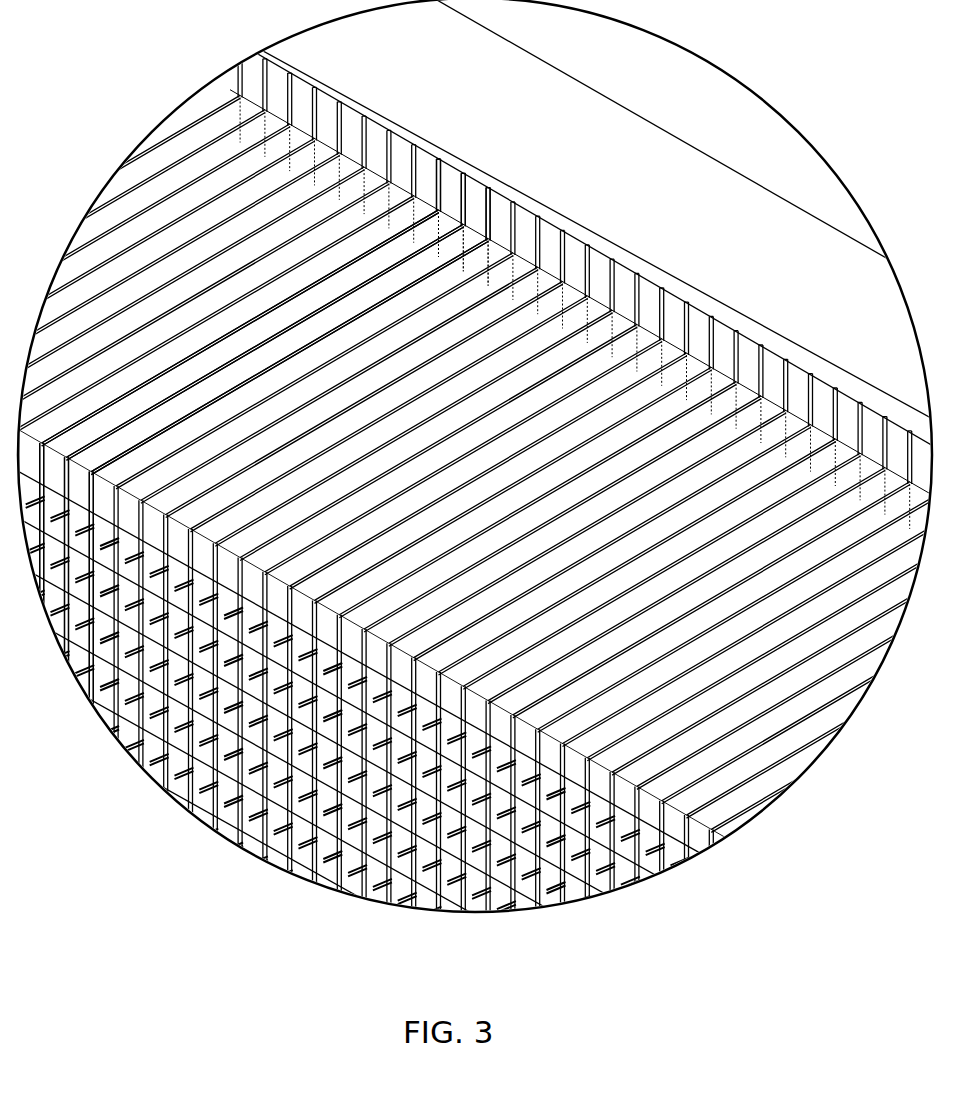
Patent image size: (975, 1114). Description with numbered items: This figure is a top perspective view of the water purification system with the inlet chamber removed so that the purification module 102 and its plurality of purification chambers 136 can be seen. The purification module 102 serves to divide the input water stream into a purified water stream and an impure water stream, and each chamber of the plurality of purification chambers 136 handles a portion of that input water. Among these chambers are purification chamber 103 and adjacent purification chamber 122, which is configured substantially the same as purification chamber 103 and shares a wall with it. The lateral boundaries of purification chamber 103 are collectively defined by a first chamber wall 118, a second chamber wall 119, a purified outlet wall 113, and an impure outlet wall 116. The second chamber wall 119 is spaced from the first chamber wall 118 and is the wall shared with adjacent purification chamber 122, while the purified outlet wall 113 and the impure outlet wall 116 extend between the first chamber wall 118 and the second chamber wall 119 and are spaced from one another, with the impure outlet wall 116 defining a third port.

The purification module 102 is at (507, 130).
The plurality of purification chambers 136 is at (118, 189).
The impure outlet wall 116 is at (454, 214).
The purification chamber 103 is at (462, 212).
The adjacent purification chamber 122 is at (484, 233).
The first chamber wall 118 is at (288, 320).
The second chamber wall 119 is at (365, 298).
The purified outlet wall 113 is at (52, 450).